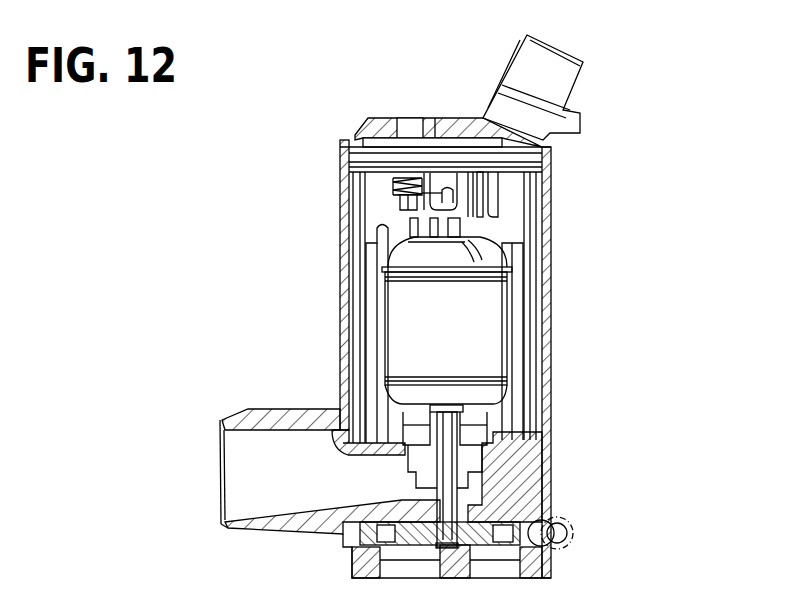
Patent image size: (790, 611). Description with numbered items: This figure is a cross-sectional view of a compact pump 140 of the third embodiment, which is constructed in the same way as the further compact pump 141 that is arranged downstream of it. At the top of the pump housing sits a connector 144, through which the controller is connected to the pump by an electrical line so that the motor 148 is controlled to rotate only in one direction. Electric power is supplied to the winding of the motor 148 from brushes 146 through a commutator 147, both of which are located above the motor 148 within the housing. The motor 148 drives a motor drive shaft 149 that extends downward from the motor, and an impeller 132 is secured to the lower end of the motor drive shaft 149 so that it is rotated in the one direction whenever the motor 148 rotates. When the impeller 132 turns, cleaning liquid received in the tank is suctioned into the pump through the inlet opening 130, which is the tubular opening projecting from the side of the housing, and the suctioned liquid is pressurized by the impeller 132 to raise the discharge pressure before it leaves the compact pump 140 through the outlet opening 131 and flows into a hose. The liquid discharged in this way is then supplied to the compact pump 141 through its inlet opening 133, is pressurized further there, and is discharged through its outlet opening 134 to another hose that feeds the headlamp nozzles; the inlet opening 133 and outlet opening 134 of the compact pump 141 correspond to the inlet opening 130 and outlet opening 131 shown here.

The compact pump 140 is at (369, 348).
The compact pump 141 is at (335, 290).
The inlet opening 130 is at (315, 429).
The inlet opening 133 is at (242, 440).
The outlet opening 131 is at (614, 508).
The outlet opening 134 is at (567, 517).
The impeller 132 is at (352, 564).
The connector 144 is at (558, 78).
The brushes 146 is at (443, 193).
The commutator 147 is at (460, 210).
The motor 148 is at (493, 307).
The motor drive shaft 149 is at (447, 433).